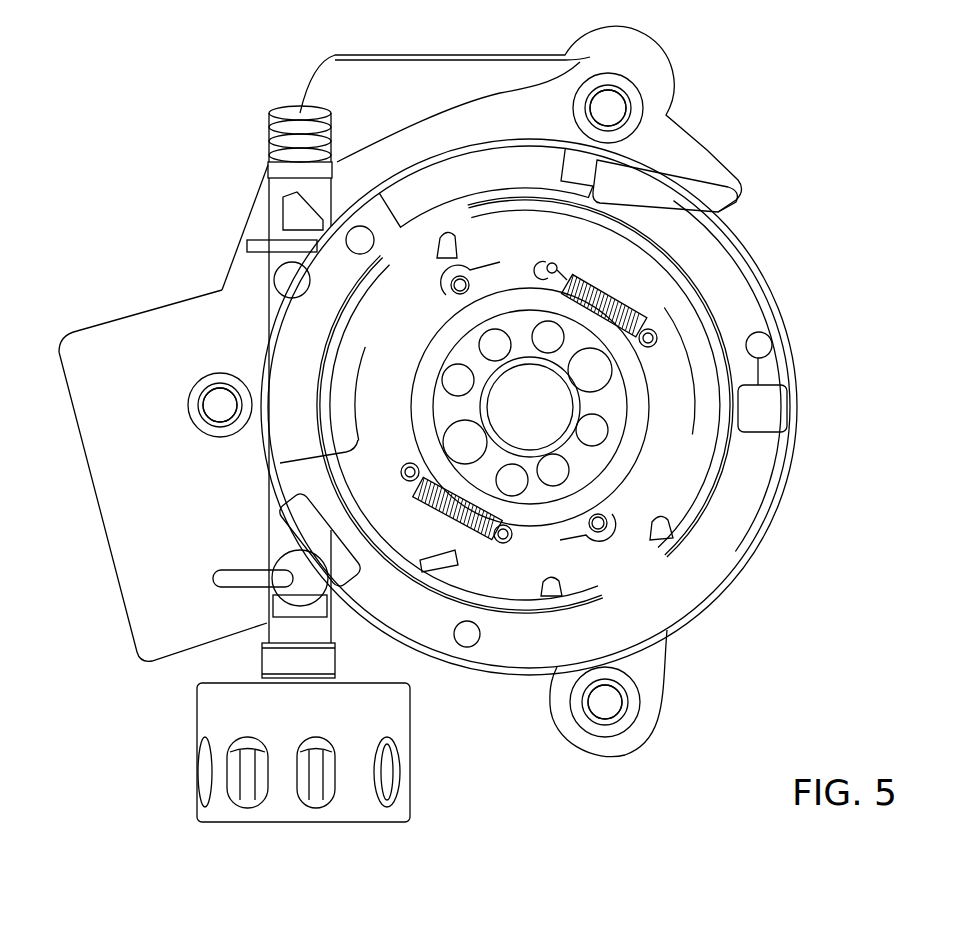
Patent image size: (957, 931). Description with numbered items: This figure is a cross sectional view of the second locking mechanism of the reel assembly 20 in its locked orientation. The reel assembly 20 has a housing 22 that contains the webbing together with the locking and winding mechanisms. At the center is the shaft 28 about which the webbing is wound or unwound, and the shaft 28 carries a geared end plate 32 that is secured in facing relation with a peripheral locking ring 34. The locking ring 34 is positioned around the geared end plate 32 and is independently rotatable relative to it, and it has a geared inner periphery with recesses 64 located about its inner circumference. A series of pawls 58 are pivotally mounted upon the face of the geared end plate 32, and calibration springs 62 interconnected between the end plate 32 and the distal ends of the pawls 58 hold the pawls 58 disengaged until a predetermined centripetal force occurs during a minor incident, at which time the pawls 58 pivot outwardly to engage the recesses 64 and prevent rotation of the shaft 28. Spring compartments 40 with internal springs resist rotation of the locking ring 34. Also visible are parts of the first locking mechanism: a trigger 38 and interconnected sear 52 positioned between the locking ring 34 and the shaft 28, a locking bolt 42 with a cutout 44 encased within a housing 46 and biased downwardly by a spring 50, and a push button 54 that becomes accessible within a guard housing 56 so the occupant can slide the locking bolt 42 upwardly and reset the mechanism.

The reel assembly 20 is at (776, 138).
The housing 22 is at (258, 188).
The shaft 28 is at (630, 443).
The geared end plate 32 is at (673, 483).
The locking ring 34 is at (630, 264).
The trigger 38 is at (273, 555).
The spring compartments 40 is at (363, 571).
The locking bolt 42 is at (272, 542).
The cutout 44 is at (287, 213).
The housing 46 is at (277, 658).
The spring 50 is at (290, 123).
The sear 52 is at (295, 583).
The push button 54 is at (250, 747).
The guard housing 56 is at (410, 805).
The pawls 58 is at (635, 212).
The calibration springs 62 is at (735, 328).
The recesses 64 is at (283, 355).